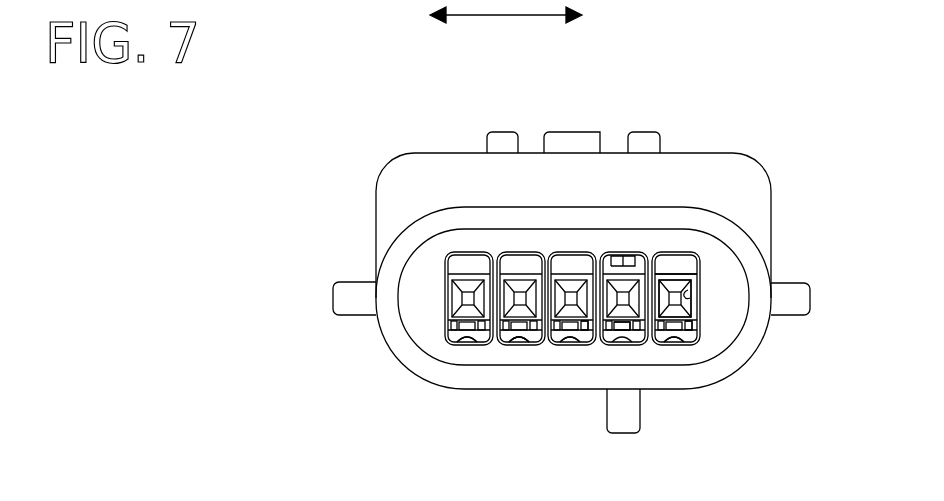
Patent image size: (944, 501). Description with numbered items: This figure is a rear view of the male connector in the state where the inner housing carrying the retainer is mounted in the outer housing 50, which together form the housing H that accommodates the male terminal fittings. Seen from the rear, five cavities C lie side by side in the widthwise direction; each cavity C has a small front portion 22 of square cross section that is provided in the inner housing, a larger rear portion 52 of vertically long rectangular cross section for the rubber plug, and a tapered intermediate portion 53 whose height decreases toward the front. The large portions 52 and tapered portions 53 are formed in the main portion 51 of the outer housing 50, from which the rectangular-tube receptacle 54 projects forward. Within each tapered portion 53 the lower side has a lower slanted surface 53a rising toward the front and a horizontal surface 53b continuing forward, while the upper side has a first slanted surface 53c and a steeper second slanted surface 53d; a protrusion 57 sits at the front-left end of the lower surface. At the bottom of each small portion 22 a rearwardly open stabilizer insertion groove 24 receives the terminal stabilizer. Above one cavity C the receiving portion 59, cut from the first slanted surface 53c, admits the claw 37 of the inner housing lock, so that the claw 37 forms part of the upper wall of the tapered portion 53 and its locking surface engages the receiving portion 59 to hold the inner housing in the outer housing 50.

The outer housing 50 is at (763, 345).
The main portion 51 is at (437, 333).
The large rear portion 52 is at (498, 331).
The tapered intermediate portion 53 is at (548, 333).
The lower slanted surface 53a is at (673, 333).
The horizontal surface 53b is at (697, 320).
The first slanted surface 53c is at (667, 254).
The second slanted surface 53d is at (673, 270).
The receptacle 54 is at (422, 175).
The protrusion 57 is at (595, 326).
The receiving portion 59 is at (629, 256).
The small front portion 22 is at (520, 312).
The stabilizer insertion groove 24 is at (626, 325).
The claw 37 is at (618, 257).
The cavity C is at (681, 286).
The housing H is at (320, 353).